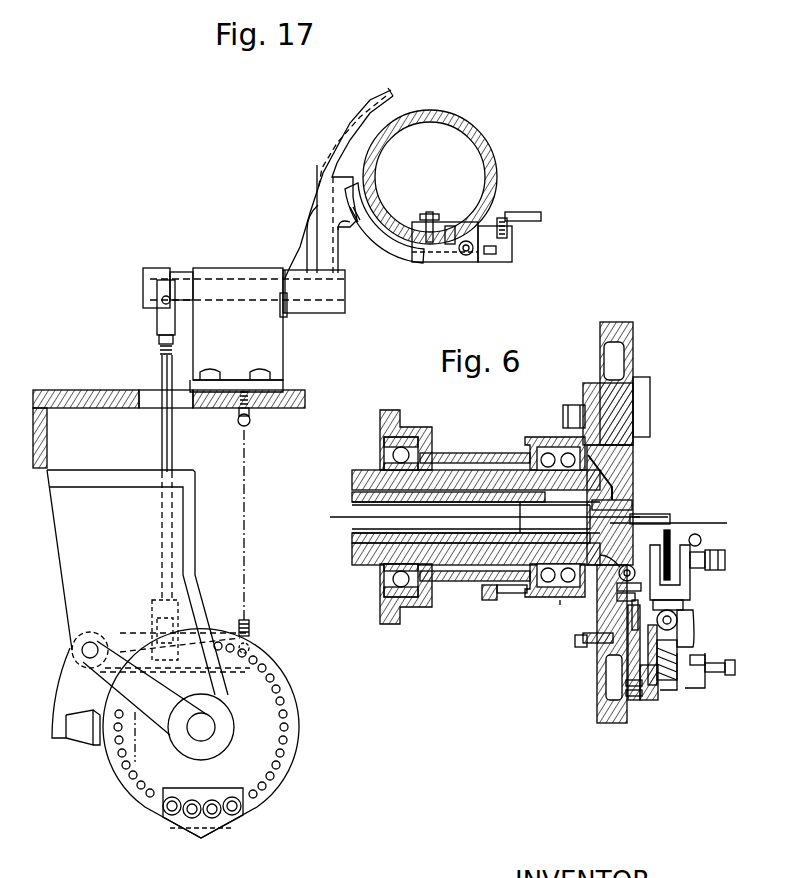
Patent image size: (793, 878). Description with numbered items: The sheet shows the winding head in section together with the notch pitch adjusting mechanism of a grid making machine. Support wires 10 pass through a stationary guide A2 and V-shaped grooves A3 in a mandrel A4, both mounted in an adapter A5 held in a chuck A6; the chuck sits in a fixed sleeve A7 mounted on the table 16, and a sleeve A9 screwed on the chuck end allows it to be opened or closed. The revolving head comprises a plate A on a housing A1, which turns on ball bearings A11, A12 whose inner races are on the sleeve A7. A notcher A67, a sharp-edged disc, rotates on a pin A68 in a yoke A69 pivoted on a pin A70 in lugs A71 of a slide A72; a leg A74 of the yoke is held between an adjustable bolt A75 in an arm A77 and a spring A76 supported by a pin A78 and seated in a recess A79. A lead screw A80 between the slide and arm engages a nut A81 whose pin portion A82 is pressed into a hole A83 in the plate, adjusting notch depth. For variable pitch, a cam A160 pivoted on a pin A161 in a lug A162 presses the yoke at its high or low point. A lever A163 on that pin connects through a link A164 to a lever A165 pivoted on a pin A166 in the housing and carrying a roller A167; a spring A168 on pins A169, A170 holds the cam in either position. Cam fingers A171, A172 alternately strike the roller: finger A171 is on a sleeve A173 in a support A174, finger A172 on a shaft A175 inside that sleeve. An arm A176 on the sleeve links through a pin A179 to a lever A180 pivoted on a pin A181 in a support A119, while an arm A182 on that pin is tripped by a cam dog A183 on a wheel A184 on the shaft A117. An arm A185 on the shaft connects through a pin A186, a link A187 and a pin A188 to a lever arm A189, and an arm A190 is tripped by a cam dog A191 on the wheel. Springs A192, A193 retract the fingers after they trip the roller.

In FIG. 6, the plate A is at (633, 334).
In FIG. 17, the housing A1 is at (452, 118).
In FIG. 6, the housing A1 is at (470, 452).
In FIG. 6, the stationary guide A2 is at (634, 516).
In FIG. 6, the V-shaped grooves A3 is at (662, 522).
In FIG. 6, the mandrel A4 is at (660, 519).
In FIG. 6, the adapter A5 is at (646, 518).
In FIG. 6, the chuck A6 is at (632, 495).
In FIG. 6, the sleeve A7 is at (470, 492).
In FIG. 6, the sleeve A9 is at (482, 509).
In FIG. 6, the ball bearing A11 is at (540, 452).
In FIG. 6, the ball bearing A12 is at (383, 444).
In FIG. 6, the support wires 10 is at (720, 525).
In FIG. 17, the table 16 is at (80, 390).
In FIG. 6, the notcher A67 is at (670, 533).
In FIG. 6, the pin A68 is at (725, 560).
In FIG. 6, the yoke A69 is at (690, 578).
In FIG. 6, the pin A70 is at (677, 620).
In FIG. 6, the lugs A71 is at (684, 604).
In FIG. 6, the slide A72 is at (648, 700).
In FIG. 6, the leg A74 is at (694, 638).
In FIG. 6, the adjustable bolt A75 is at (735, 668).
In FIG. 6, the spring A76 is at (666, 660).
In FIG. 6, the arm A77 is at (705, 688).
In FIG. 6, the pin A78 is at (668, 668).
In FIG. 6, the recess A79 is at (695, 657).
In FIG. 6, the lead screw A80 is at (620, 652).
In FIG. 6, the nut A81 is at (628, 660).
In FIG. 6, the pin portion A82 is at (590, 650).
In FIG. 6, the hole A83 is at (583, 640).
In FIG. 17, the shaft A117 is at (215, 730).
In FIG. 17, the support A119 is at (57, 575).
In FIG. 17, the cam A160 is at (440, 214).
In FIG. 6, the cam A160 is at (630, 563).
In FIG. 17, the pin A161 is at (456, 228).
In FIG. 6, the pin A161 is at (613, 583).
In FIG. 6, the lug A162 is at (592, 590).
In FIG. 17, the lever A163 is at (480, 260).
In FIG. 17, the link A164 is at (468, 257).
In FIG. 6, the link A164 is at (515, 594).
In FIG. 17, the lever A165 is at (393, 258).
In FIG. 6, the lever A165 is at (489, 602).
In FIG. 17, the pin A166 is at (356, 228).
In FIG. 17, the roller A167 is at (322, 160).
In FIG. 17, the spring A168 is at (506, 238).
In FIG. 17, the pin A169 is at (500, 250).
In FIG. 17, the pin A170 is at (500, 215).
In FIG. 17, the cam finger A171 is at (300, 194).
In FIG. 17, the cam finger A172 is at (307, 218).
In FIG. 17, the sleeve A173 is at (222, 282).
In FIG. 17, the support A174 is at (205, 268).
In FIG. 17, the shaft A175 is at (325, 300).
In FIG. 17, the arm A176 is at (152, 268).
In FIG. 17, the pin A179 is at (160, 672).
In FIG. 17, the lever A180 is at (122, 633).
In FIG. 17, the pin A181 is at (75, 650).
In FIG. 17, the arm A182 is at (57, 690).
In FIG. 17, the cam dog A183 is at (100, 745).
In FIG. 17, the wheel A184 is at (132, 795).
In FIG. 17, the arm A185 is at (178, 272).
In FIG. 17, the pin A186 is at (157, 288).
In FIG. 17, the link A187 is at (160, 435).
In FIG. 17, the pin A188 is at (152, 622).
In FIG. 17, the lever arm A189 is at (222, 634).
In FIG. 17, the arm A190 is at (66, 712).
In FIG. 17, the cam dog A191 is at (207, 836).
In FIG. 17, the spring A192 is at (255, 648).
In FIG. 17, the spring A193 is at (252, 620).